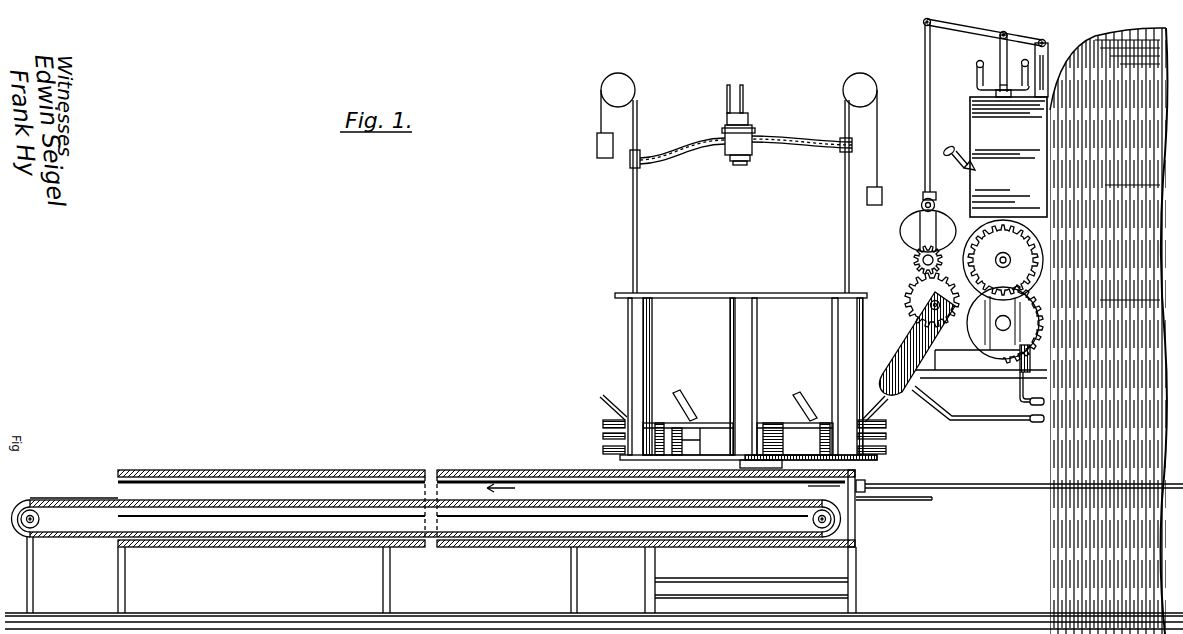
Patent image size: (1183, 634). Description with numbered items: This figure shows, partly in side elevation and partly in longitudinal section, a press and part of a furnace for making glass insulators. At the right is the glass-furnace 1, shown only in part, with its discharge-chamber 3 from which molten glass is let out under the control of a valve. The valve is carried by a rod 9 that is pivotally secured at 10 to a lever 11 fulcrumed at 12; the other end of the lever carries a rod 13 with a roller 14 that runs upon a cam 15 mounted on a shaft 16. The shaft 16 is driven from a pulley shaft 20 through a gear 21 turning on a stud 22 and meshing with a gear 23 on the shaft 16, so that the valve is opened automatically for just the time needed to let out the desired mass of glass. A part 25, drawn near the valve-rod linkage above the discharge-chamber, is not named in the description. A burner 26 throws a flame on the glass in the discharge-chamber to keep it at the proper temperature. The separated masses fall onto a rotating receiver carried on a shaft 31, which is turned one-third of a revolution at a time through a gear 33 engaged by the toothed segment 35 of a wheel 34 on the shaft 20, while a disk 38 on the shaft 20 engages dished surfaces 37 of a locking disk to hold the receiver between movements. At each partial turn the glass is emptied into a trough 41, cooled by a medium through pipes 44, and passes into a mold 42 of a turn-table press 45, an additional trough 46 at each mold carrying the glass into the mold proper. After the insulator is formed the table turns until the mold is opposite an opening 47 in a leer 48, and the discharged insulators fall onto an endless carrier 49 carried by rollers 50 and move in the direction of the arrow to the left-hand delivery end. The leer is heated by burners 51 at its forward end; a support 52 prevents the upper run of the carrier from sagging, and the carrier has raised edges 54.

The glass-furnace 1 is at (1108, 331).
The discharge-chamber 3 is at (972, 195).
The rod 9 is at (996, 96).
The pivot 10 is at (1007, 35).
The lever 11 is at (960, 35).
The fulcrum 12 is at (1045, 42).
The rod 13 is at (925, 118).
The roller 14 is at (921, 203).
The cam 15 is at (900, 232).
The shaft 16 is at (914, 258).
The shaft 20 is at (1010, 320).
The gear 21 is at (908, 297).
The stud 22 is at (931, 306).
The gear 23 is at (915, 266).
The fork 25 is at (976, 80).
The burner 26 is at (955, 150).
The shaft 31 is at (1010, 257).
The gear 33 is at (1040, 263).
The wheel 34 is at (1030, 362).
The segment 35 is at (1041, 323).
The dished surfaces 37 is at (1040, 230).
The disk 38 is at (981, 363).
The trough 41 is at (917, 343).
The mold 42 is at (603, 424).
The pipes 44 is at (1020, 390).
The turn-table press 45 is at (622, 458).
The additional trough 46 is at (678, 396).
The opening 47 is at (818, 484).
The leer 48 is at (388, 470).
The carrier 49 is at (262, 518).
The rollers 50 is at (28, 505).
The burners 51 is at (866, 482).
The support 52 is at (426, 518).
The raised edges 54 is at (74, 491).